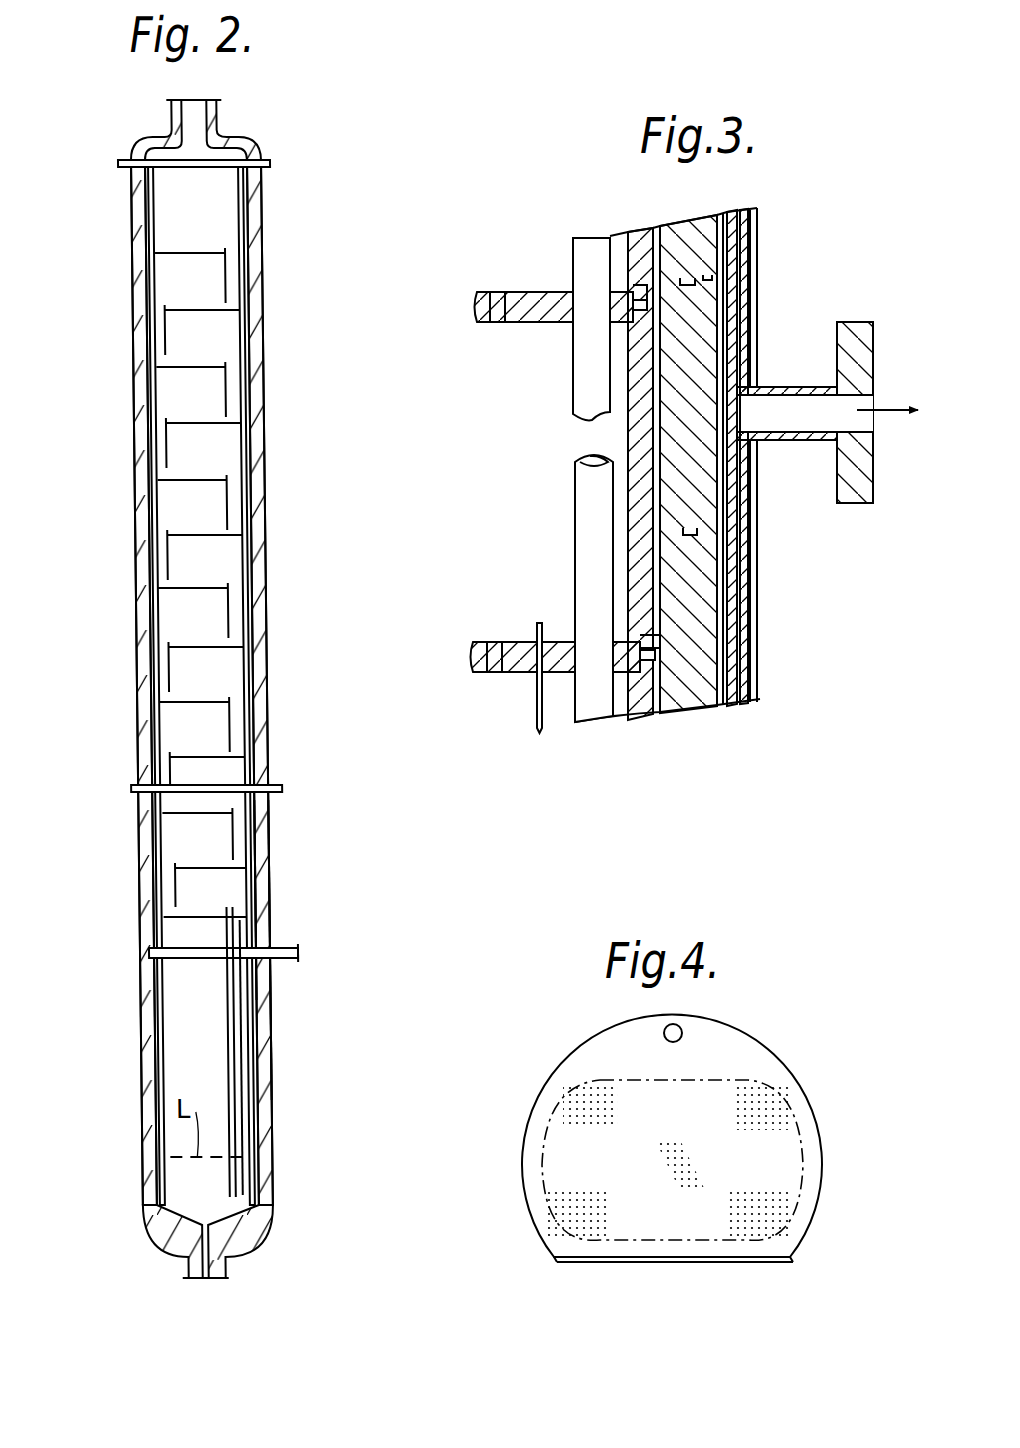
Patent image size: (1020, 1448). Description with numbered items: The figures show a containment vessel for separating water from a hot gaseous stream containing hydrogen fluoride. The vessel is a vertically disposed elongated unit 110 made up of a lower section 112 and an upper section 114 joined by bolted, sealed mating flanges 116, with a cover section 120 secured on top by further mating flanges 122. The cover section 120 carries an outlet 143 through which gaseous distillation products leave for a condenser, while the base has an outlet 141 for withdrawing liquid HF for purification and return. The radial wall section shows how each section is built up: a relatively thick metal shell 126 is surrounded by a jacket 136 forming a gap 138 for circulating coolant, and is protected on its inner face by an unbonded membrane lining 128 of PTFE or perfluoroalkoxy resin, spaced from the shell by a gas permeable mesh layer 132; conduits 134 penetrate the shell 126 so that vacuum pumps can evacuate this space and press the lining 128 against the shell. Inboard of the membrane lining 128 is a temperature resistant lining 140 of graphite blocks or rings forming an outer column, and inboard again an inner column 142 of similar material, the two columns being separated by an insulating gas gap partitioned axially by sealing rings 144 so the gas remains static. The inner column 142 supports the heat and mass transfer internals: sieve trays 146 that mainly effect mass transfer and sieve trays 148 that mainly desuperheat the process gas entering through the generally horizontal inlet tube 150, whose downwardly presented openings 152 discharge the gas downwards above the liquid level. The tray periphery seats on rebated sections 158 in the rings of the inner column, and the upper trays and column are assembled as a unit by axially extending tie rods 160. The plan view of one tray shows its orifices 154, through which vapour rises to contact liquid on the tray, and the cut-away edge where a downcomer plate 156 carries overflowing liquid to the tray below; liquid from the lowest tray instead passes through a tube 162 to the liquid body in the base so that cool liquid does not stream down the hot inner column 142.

In FIG. 2, the elongated unit 110 is at (118, 720).
In FIG. 2, the lower section 112 is at (126, 1001).
In FIG. 2, the upper section 114 is at (120, 546).
In FIG. 2, the mating flanges 116 is at (282, 790).
In FIG. 2, the cover section 120 is at (218, 109).
In FIG. 2, the mating flanges 122 is at (277, 163).
In FIG. 2, the metal shell 126 is at (269, 950).
In FIG. 3, the metal shell 126 is at (752, 603).
In FIG. 2, the lining 128 is at (254, 850).
In FIG. 3, the lining 128 is at (726, 707).
In FIG. 2, the layer of gas permeable material 132 is at (271, 1050).
In FIG. 3, the layer of gas permeable material 132 is at (728, 707).
In FIG. 3, the conduits 134 is at (774, 388).
In FIG. 2, the jacket 136 is at (262, 855).
In FIG. 3, the jacket 136 is at (758, 628).
In FIG. 2, the gap 138 is at (268, 850).
In FIG. 3, the gap 138 is at (748, 545).
In FIG. 2, the temperature resistant lining 140 is at (255, 950).
In FIG. 3, the temperature resistant lining 140 is at (708, 243).
In FIG. 2, the outlet 141 is at (182, 1268).
In FIG. 2, the inner column 142 is at (248, 638).
In FIG. 3, the inner column 142 is at (640, 371).
In FIG. 2, the outlet 143 is at (178, 122).
In FIG. 3, the sealing rings 144 is at (676, 687).
In FIG. 2, the sieve trays 146 is at (180, 259).
In FIG. 3, the sieve trays 146 is at (537, 300).
In FIG. 4, the sieve trays 146 is at (808, 1113).
In FIG. 2, the sieve trays 148 is at (174, 912).
In FIG. 3, the sieve trays 148 is at (520, 665).
In FIG. 4, the sieve trays 148 is at (669, 1161).
In FIG. 2, the inlet tube 150 is at (300, 953).
In FIG. 2, the downwardly presented openings 152 is at (215, 962).
In FIG. 4, the orifices 154 is at (555, 1208).
In FIG. 2, the downcomer plate 156 is at (229, 265).
In FIG. 3, the downcomer plate 156 is at (547, 713).
In FIG. 4, the downcomer plate 156 is at (678, 1260).
In FIG. 3, the rebated sections 158 is at (655, 310).
In FIG. 3, the tie rods 160 is at (580, 553).
In FIG. 2, the tube 162 is at (236, 1115).